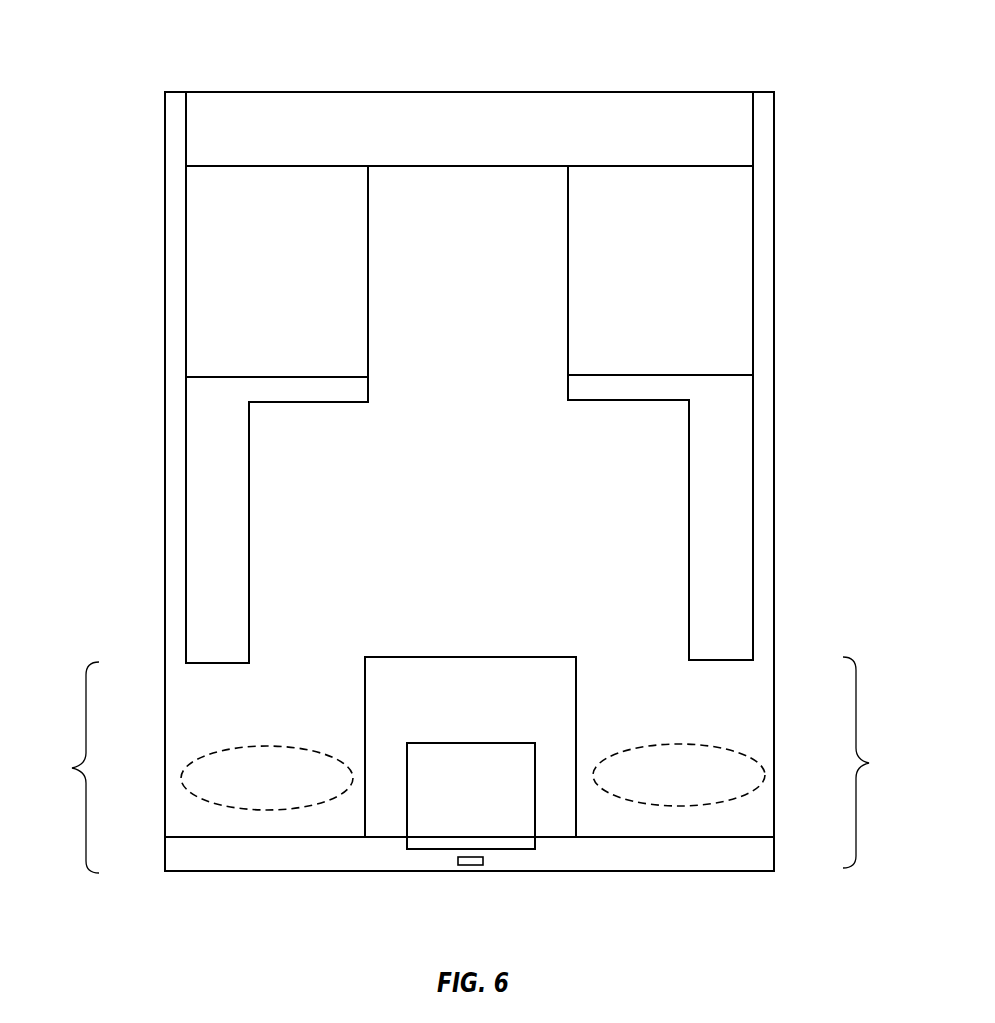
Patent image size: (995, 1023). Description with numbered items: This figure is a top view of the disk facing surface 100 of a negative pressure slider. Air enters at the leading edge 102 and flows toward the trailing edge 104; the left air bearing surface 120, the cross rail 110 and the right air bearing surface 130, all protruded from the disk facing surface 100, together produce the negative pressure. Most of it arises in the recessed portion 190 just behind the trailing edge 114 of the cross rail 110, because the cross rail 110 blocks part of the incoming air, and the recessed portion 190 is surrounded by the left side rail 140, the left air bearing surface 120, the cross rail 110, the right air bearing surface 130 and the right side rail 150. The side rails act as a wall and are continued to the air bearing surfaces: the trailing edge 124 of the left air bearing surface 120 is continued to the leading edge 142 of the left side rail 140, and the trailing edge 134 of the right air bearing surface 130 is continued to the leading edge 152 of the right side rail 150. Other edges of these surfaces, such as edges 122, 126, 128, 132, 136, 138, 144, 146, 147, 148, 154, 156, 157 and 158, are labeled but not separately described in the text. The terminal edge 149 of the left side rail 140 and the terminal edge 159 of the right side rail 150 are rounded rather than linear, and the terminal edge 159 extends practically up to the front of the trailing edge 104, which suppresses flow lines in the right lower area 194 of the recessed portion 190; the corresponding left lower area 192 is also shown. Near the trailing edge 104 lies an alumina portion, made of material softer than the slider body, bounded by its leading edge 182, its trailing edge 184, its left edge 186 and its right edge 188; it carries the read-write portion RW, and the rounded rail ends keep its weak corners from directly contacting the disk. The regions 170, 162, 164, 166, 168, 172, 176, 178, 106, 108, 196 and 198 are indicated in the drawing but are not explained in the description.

The disk facing surface 100 is at (592, 59).
The leading edge 102 is at (366, 92).
The trailing edge 104 is at (339, 872).
The left side wall 106 is at (165, 433).
The right side wall 108 is at (775, 412).
The cross rail 110 is at (488, 141).
The trailing edge of the cross rail 114 is at (488, 168).
The left air bearing surface 120 is at (298, 281).
The top edge of left upper array 122 is at (303, 168).
The trailing edge of the left air bearing surface 124 is at (304, 376).
The left edge of left upper array 126 is at (186, 239).
The right edge of left upper array 128 is at (368, 319).
The right air bearing surface 130 is at (683, 281).
The top edge of right upper array 132 is at (686, 166).
The trailing edge of the right air bearing surface 134 is at (686, 374).
The right edge of right upper array 136 is at (753, 317).
The left edge of right upper array 138 is at (569, 239).
The left side rail 140 is at (240, 550).
The leading edge of the left side rail 142 is at (247, 380).
The inner horizontal edge of left lower array 144 is at (326, 403).
The outer edge of left lower array 146 is at (186, 466).
The inner vertical edge of left lower array 147 is at (249, 498).
The corner of left lower array 148 is at (369, 388).
The terminal edge of the left side rail 149 is at (224, 663).
The right side rail 150 is at (743, 546).
The leading edge of the right side rail 152 is at (696, 378).
The inner horizontal edge of right lower array 154 is at (643, 402).
The outer edge of right lower array 156 is at (753, 497).
The inner vertical edge of right lower array 157 is at (690, 581).
The corner of right lower array 158 is at (569, 390).
The terminal edge of the right side rail 159 is at (718, 657).
The top edge of drive array 162 is at (464, 743).
The bottom edge of drive array 164 is at (476, 847).
The left edge of drive array 166 is at (407, 830).
The right edge of drive array 168 is at (535, 765).
The drive module region 170 is at (492, 721).
The top edge of drive module region 172 is at (437, 657).
The left edge of drive module region 176 is at (365, 737).
The right edge of drive module region 178 is at (576, 684).
The leading edge of the alumina portion 182 is at (763, 834).
The trailing edge of the alumina portion 184 is at (673, 872).
The left edge of the alumina portion 186 is at (167, 862).
The right edge of the alumina portion 188 is at (776, 852).
The recessed portion 190 is at (490, 561).
The left robot home position 192 is at (287, 792).
The right lower area of the recessed portion 194 is at (699, 789).
The left lower region 196 is at (63, 767).
The right lower region 198 is at (879, 762).
The R/W portion RW is at (490, 860).